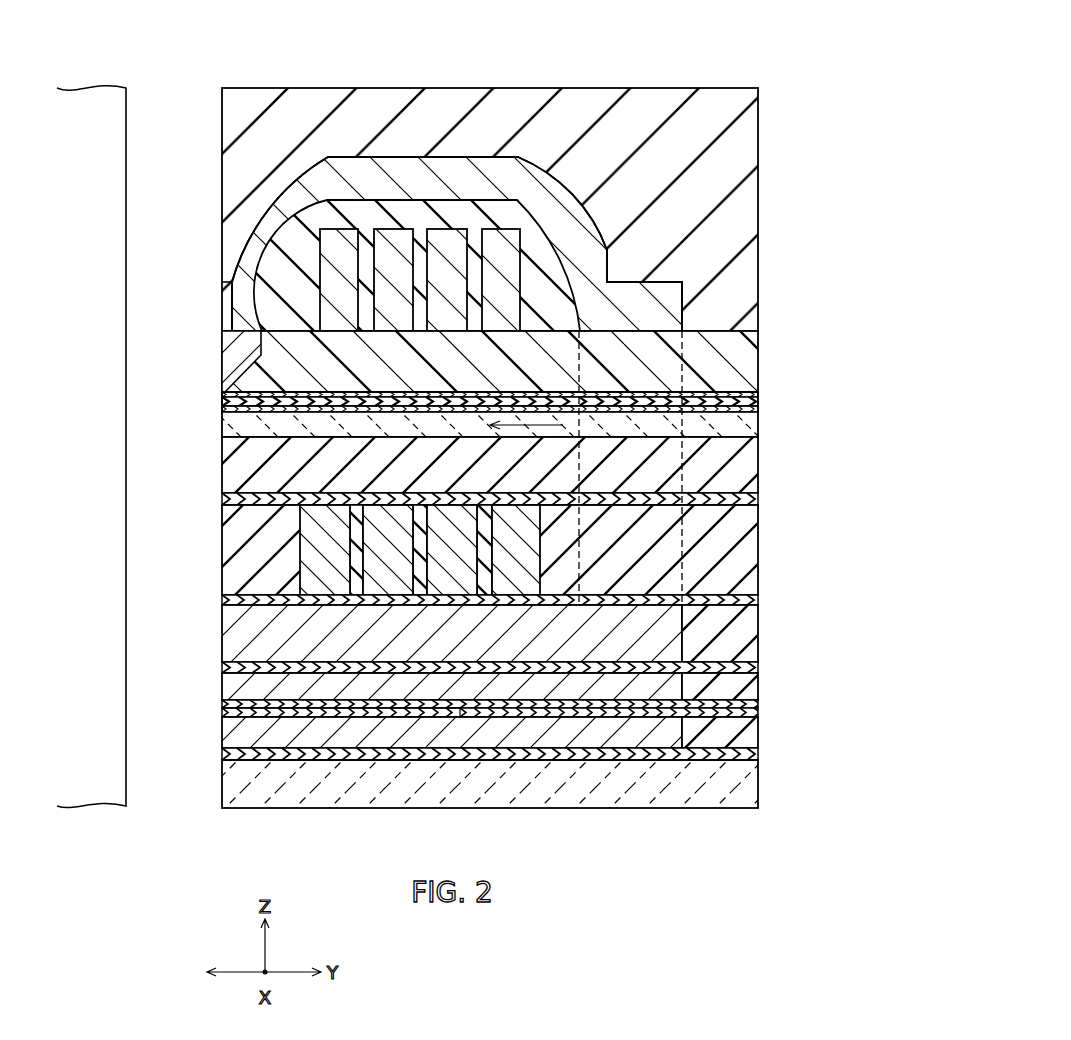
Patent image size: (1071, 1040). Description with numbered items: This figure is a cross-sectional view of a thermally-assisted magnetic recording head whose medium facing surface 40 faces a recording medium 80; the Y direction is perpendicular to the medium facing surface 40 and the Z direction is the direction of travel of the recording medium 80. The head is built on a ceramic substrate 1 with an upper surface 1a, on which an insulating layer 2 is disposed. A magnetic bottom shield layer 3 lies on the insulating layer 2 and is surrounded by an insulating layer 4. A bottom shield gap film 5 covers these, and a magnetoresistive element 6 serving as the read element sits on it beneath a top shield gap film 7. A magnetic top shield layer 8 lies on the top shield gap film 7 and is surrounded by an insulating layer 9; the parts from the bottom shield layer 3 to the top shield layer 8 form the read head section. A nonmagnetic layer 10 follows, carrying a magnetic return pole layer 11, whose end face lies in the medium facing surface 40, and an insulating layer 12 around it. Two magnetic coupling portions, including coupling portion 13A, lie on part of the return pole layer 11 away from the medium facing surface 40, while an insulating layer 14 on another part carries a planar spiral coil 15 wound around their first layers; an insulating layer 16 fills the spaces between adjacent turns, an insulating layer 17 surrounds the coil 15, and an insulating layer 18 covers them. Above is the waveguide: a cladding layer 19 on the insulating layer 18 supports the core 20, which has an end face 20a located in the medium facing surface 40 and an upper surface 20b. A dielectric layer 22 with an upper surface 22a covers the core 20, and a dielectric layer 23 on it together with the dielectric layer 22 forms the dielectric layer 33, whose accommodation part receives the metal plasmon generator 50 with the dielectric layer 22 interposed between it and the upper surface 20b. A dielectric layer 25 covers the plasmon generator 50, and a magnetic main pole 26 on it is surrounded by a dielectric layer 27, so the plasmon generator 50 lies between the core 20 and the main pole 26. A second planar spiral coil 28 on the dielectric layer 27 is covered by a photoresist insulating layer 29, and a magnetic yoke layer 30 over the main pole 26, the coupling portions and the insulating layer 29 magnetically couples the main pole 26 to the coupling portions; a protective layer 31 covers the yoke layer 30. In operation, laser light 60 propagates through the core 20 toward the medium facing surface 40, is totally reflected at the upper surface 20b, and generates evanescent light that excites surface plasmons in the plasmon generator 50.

The substrate 1 is at (250, 808).
The upper surface 1a is at (222, 757).
The insulating layer 2 is at (759, 753).
The bottom shield layer 3 is at (222, 733).
The insulating layer 4 is at (759, 735).
The bottom shield gap film 5 is at (759, 714).
The magnetoresistive element 6 is at (246, 706).
The top shield gap film 7 is at (759, 706).
The top shield layer 8 is at (222, 683).
The insulating layer 9 is at (759, 688).
The nonmagnetic layer 10 is at (759, 668).
The return pole layer 11 is at (222, 640).
The insulating layer 12 is at (759, 622).
The coupling portion 13A is at (682, 532).
The insulating layer 14 is at (759, 600).
The coil 15 is at (300, 545).
The insulating layer 16 is at (493, 545).
The insulating layer 17 is at (759, 543).
The insulating layer 18 is at (759, 503).
The cladding layer 19 is at (759, 457).
The core 20 is at (338, 415).
The end face 20a is at (222, 427).
The upper surface 20b is at (307, 392).
The dielectric layer 22 is at (759, 408).
The upper surface 22a is at (288, 405).
The dielectric layer 23 is at (759, 402).
The dielectric layer 25 is at (759, 395).
The main pole 26 is at (222, 348).
The dielectric layer 27 is at (759, 360).
The coil 28 is at (385, 229).
The insulating layer 29 is at (430, 200).
The yoke layer 30 is at (483, 157).
The protective layer 31 is at (543, 88).
The dielectric layer 33 is at (848, 390).
The medium facing surface 40 is at (214, 126).
The plasmon generator 50 is at (222, 403).
The laser light 60 is at (535, 425).
The recording medium 80 is at (91, 97).